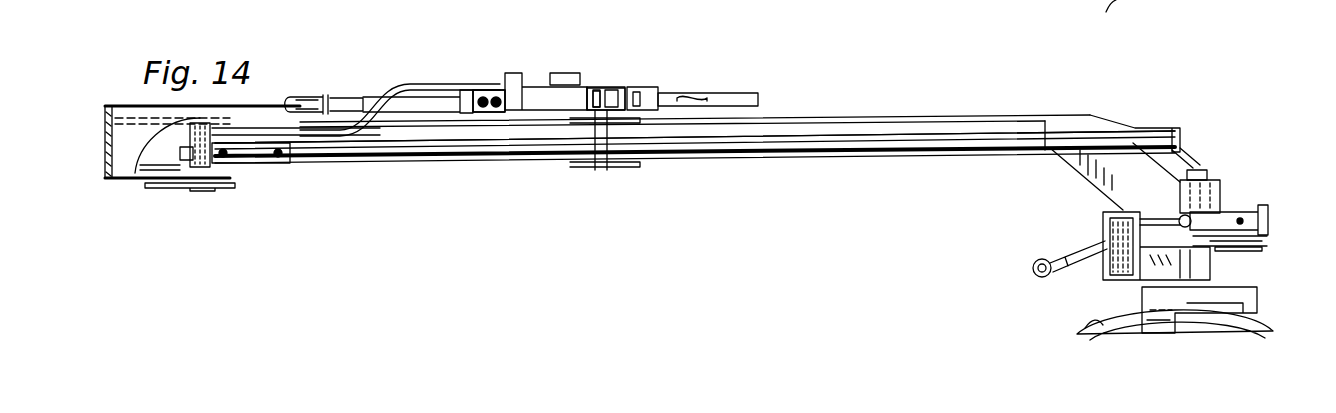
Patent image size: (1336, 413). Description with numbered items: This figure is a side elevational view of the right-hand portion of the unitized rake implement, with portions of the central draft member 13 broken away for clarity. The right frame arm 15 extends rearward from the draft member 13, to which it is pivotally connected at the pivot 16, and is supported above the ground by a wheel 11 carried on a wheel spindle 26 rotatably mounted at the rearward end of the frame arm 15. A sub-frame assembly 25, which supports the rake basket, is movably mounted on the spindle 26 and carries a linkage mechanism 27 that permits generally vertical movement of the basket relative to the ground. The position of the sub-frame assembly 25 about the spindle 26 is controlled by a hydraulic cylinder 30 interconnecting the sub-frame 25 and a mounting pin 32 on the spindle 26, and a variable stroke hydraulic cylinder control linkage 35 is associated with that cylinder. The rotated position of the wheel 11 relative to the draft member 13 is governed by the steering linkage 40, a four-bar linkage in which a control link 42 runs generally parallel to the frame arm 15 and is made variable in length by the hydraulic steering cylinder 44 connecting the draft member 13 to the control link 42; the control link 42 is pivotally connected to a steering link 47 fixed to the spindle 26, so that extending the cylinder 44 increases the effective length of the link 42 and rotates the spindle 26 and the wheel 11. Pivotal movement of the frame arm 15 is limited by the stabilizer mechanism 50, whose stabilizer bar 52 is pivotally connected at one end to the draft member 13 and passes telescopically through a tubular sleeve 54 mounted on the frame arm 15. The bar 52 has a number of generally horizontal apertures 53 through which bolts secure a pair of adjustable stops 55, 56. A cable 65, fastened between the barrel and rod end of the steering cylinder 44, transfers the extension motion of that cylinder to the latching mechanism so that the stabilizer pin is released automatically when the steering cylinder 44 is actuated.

The wheel 11 is at (1092, 318).
The central draft member 13 is at (258, 106).
The right frame arm 15 is at (870, 118).
The pivot 16 is at (205, 188).
The sub-frame assembly 25 is at (1102, 265).
The wheel spindle 26 is at (1207, 178).
The linkage mechanism 27 is at (1035, 262).
The hydraulic cylinder 30 is at (1232, 212).
The mounting pin 32 is at (1266, 223).
The variable stroke hydraulic cylinder control linkage 35 is at (1245, 251).
The steering linkage 40 is at (392, 225).
The control link 42 is at (882, 140).
The hydraulic steering cylinder 44 is at (262, 163).
The steering link 47 is at (1192, 152).
The stabilizer mechanism 50 is at (546, 41).
The stabilizer bar 52 is at (755, 92).
The apertures 53 is at (691, 97).
The tubular sleeve 54 is at (614, 87).
The adjustable stop 55 is at (482, 112).
The adjustable stop 56 is at (645, 88).
The cable 65 is at (433, 80).